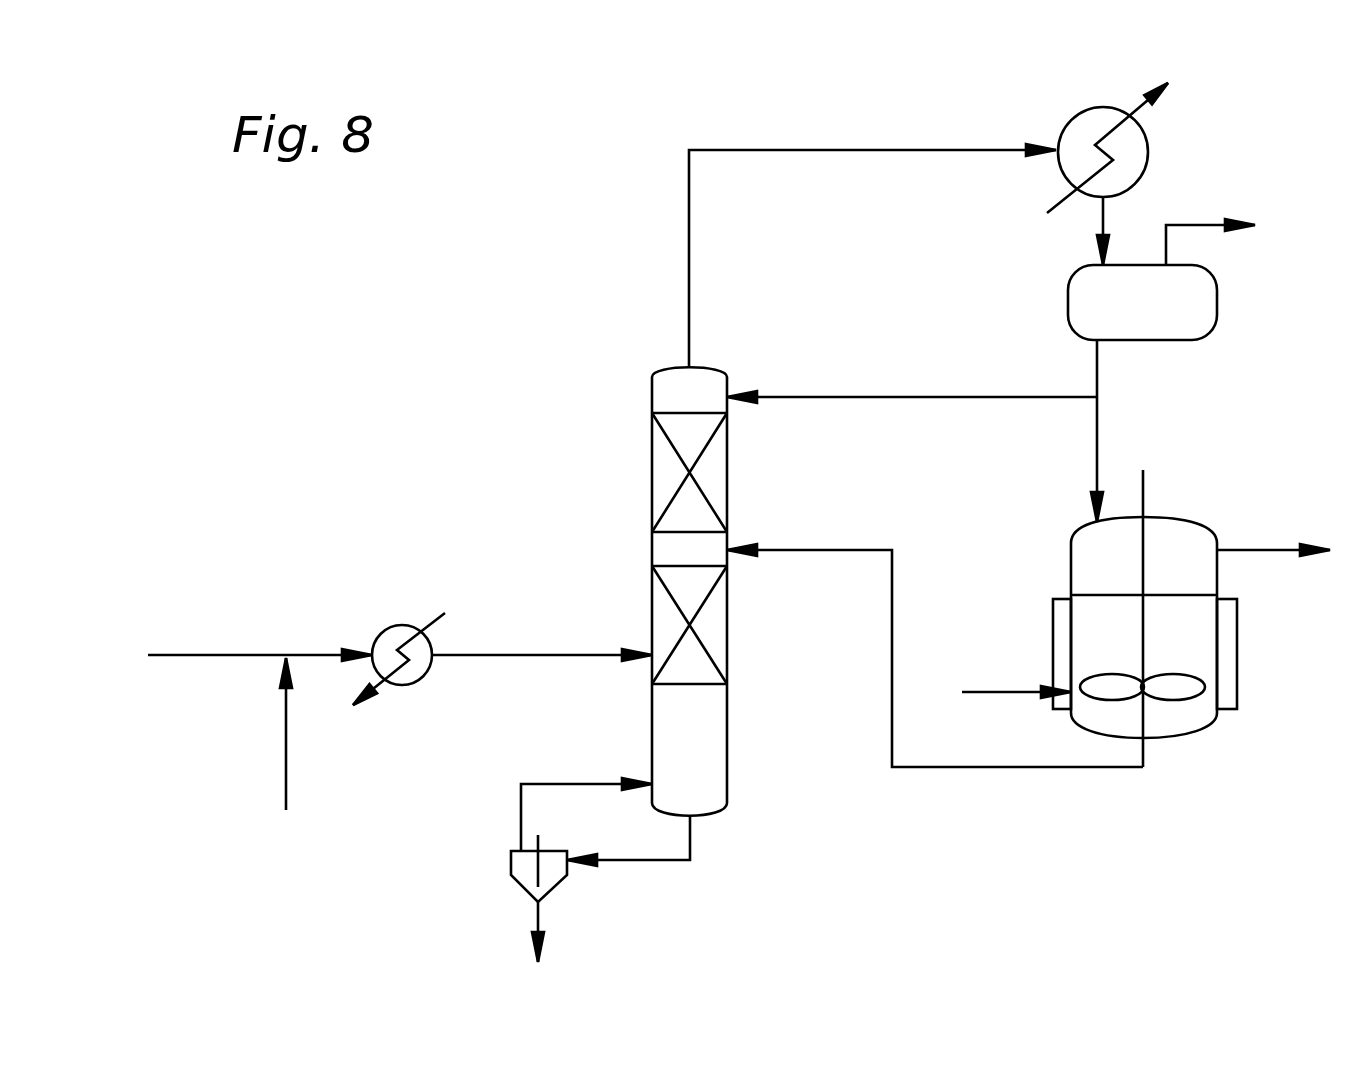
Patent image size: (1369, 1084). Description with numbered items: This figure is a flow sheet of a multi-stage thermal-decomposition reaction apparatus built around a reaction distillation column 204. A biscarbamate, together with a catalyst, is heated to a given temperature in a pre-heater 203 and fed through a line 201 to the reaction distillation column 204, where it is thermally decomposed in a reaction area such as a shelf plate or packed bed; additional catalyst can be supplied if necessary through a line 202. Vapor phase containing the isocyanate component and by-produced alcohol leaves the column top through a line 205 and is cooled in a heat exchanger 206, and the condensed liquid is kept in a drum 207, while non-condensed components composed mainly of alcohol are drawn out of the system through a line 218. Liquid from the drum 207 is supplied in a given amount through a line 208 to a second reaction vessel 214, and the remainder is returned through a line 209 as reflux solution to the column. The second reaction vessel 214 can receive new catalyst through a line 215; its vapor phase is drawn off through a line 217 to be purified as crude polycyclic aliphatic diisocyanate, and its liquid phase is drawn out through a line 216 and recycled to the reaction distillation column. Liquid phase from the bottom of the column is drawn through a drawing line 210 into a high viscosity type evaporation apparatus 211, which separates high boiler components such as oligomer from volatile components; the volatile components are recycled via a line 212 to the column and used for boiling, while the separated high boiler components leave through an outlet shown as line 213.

The line 201 is at (205, 654).
The line 202 is at (286, 745).
The pre-heater 203 is at (395, 626).
The reaction distillation column 204 is at (652, 464).
The line 205 is at (690, 238).
The heat exchanger 206 is at (1150, 140).
The drum 207 is at (1218, 300).
The line 208 is at (1097, 428).
The line 209 is at (925, 397).
The drawing line 210 is at (690, 843).
The high viscosity type evaporation apparatus 211 is at (511, 865).
The line 212 is at (572, 784).
The solids outlet 213 is at (540, 920).
The second reaction vessel 214 is at (1068, 550).
The line 215 is at (998, 690).
The line 216 is at (1033, 768).
The line 217 is at (1251, 550).
The line 218 is at (1188, 224).